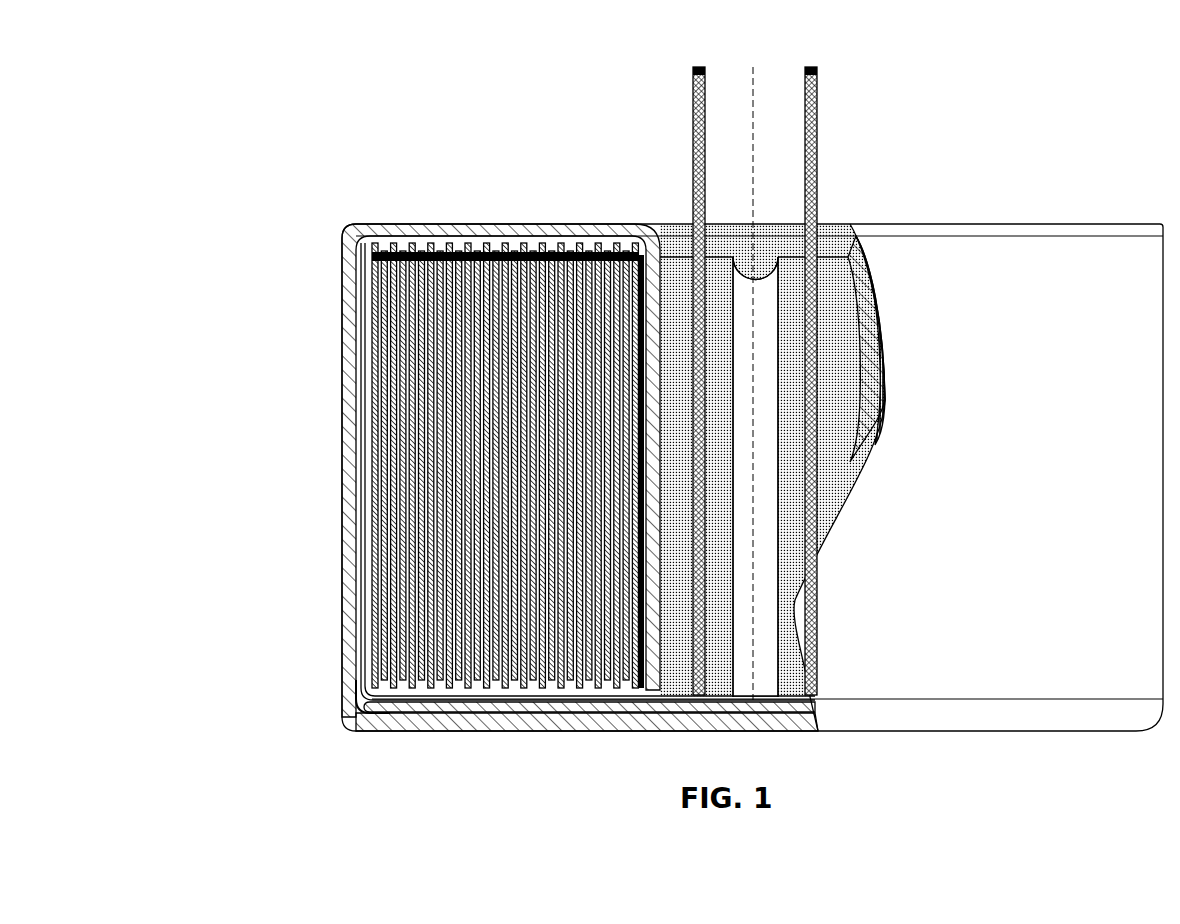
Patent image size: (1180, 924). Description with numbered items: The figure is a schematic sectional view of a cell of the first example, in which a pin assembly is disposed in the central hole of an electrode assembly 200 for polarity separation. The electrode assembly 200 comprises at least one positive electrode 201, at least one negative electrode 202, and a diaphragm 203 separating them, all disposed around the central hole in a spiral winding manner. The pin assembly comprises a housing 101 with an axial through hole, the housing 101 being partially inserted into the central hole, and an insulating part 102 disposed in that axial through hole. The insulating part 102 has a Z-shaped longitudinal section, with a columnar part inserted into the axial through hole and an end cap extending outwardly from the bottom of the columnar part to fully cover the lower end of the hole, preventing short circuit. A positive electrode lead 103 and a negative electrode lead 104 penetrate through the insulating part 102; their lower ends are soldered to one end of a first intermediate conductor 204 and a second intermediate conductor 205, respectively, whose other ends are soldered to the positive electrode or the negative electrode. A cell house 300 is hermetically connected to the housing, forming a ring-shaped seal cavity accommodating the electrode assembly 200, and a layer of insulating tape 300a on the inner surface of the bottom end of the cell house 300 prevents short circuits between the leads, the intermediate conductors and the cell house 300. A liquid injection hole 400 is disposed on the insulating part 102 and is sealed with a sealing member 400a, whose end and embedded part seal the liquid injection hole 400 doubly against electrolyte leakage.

The housing 101 is at (538, 226).
The insulating part 102 is at (835, 278).
The positive electrode lead 103 is at (753, 62).
The negative electrode lead 104 is at (810, 72).
The electrode assembly 200 is at (477, 471).
The positive electrode 201 is at (385, 340).
The negative electrode 202 is at (397, 418).
The diaphragm 203 is at (387, 511).
The first intermediate conductor 204 is at (367, 593).
The second intermediate conductor 205 is at (216, 272).
The cell house 300 is at (348, 670).
The insulating tape 300a is at (360, 705).
The liquid injection hole 400 is at (750, 315).
The sealing member 400a is at (753, 272).